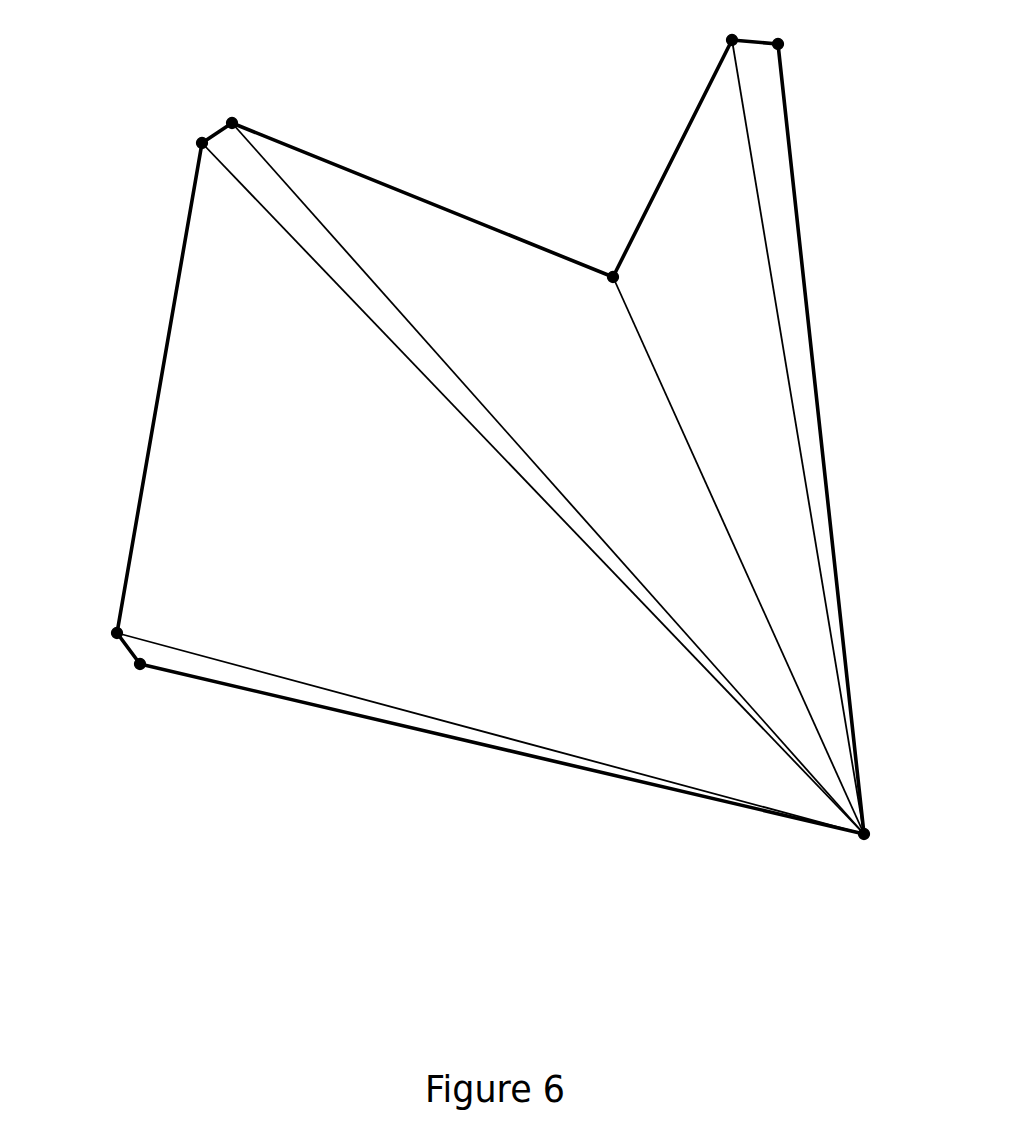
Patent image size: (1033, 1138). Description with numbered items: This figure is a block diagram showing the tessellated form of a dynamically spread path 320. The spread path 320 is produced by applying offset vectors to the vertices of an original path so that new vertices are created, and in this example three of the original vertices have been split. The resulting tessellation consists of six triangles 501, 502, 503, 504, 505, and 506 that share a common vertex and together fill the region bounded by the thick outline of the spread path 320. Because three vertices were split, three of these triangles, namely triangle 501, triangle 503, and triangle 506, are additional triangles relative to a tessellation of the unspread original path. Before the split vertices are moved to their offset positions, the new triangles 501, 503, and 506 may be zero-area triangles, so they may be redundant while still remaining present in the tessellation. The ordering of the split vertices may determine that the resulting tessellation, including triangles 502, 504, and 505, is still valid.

The spread path 320 is at (553, 775).
The triangle 501 is at (175, 667).
The triangle 502 is at (176, 385).
The triangle 503 is at (224, 151).
The triangle 504 is at (329, 178).
The triangle 505 is at (681, 176).
The triangle 506 is at (769, 134).